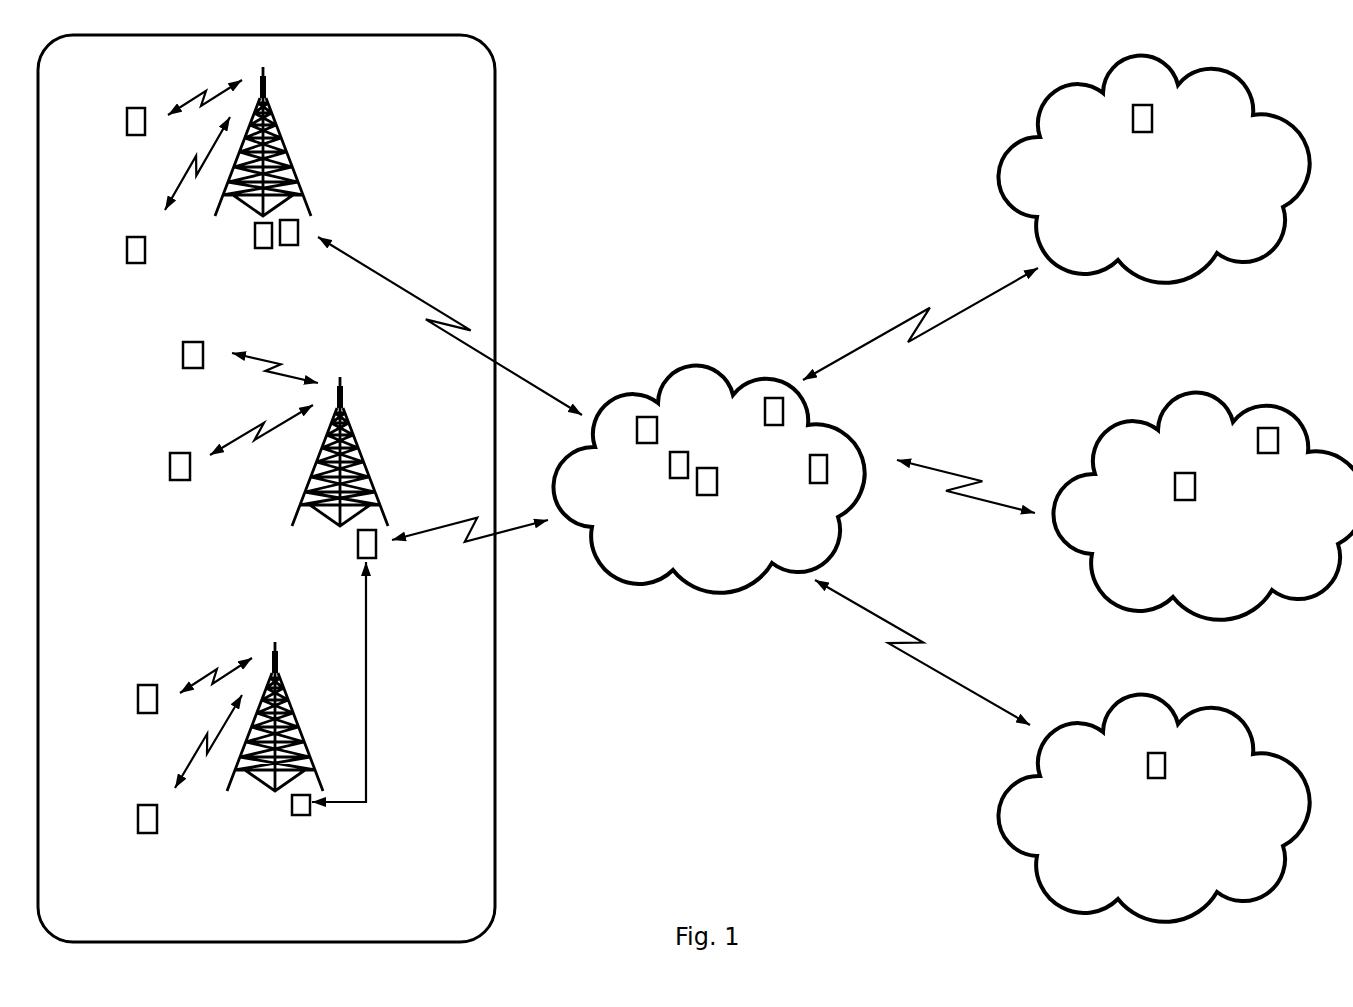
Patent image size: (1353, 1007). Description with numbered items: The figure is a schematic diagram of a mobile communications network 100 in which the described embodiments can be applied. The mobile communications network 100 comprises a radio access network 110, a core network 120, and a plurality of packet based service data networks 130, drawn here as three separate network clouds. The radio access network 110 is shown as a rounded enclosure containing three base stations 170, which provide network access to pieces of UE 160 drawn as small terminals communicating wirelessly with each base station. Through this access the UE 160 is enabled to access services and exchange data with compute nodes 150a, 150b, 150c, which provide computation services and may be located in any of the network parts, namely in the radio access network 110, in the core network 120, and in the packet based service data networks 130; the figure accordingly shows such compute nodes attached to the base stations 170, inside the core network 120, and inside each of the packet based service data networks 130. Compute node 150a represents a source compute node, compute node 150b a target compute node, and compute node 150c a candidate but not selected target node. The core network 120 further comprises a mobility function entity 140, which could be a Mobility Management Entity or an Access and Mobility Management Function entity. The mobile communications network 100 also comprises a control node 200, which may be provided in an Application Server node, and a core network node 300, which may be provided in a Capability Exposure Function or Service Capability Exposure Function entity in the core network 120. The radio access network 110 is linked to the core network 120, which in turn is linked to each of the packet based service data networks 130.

The mobile communications network 100 is at (653, 97).
The radio access network 110 is at (289, 935).
The core network 120 is at (716, 408).
The packet based service data networks 130 is at (1103, 258).
The mobility function entity 140 is at (640, 444).
The compute node 150a is at (288, 246).
The compute node 150b is at (255, 232).
The compute node 150c is at (670, 470).
The UE 160 is at (127, 120).
The base stations 170 is at (265, 75).
The control node 200 is at (810, 470).
The core network node 300 is at (765, 412).